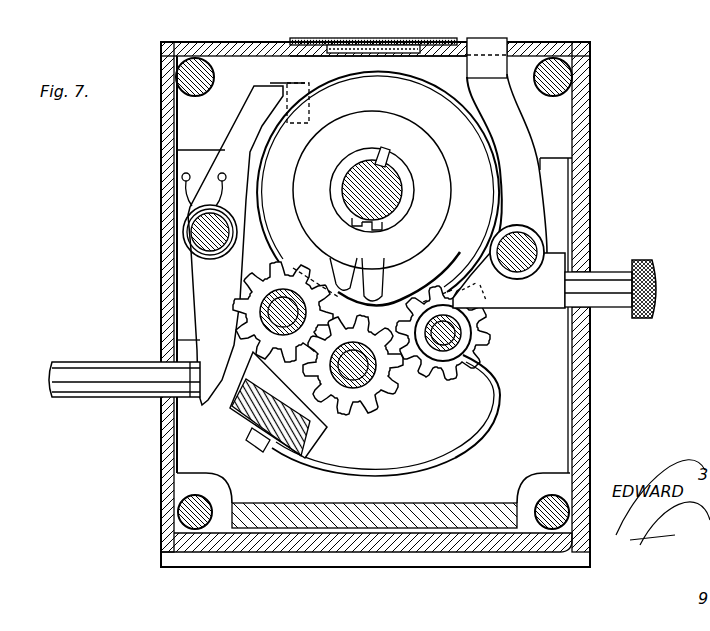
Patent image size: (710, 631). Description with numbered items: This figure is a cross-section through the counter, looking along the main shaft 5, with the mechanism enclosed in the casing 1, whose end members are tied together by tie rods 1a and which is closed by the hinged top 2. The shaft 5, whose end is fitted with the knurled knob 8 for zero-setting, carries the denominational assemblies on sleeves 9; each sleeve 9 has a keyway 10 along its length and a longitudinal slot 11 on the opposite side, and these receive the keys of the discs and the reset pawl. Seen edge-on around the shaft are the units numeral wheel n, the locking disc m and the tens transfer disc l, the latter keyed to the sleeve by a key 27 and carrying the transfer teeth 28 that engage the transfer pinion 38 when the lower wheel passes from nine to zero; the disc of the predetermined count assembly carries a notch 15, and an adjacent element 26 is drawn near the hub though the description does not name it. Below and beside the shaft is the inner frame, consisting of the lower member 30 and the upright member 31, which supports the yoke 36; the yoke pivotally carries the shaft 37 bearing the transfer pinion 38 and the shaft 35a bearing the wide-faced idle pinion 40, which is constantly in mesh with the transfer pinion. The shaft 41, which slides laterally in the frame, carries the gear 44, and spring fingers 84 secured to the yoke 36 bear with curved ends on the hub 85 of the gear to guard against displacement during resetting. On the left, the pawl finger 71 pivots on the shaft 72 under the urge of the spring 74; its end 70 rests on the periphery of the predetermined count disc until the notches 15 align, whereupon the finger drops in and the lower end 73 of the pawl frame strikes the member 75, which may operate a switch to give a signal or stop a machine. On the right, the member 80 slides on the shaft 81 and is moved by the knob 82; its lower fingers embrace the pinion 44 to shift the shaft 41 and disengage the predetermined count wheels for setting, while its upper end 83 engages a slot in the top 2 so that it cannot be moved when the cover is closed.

The casing 1 is at (575, 125).
The tie rods 1a is at (183, 66).
The hinged top 2 is at (548, 44).
The shaft 5 is at (394, 186).
The knurled knob 8 is at (445, 240).
The sleeve 9 is at (390, 224).
The keyway 10 is at (371, 240).
The longitudinal slot 11 is at (372, 152).
The notch 15 is at (337, 118).
The ring 26 is at (332, 262).
The key 27 is at (352, 211).
The transfer teeth 28 is at (356, 275).
The lower member 30 is at (313, 527).
The upright member 31 is at (570, 162).
The shaft 35a is at (343, 402).
The yoke 36 is at (314, 443).
The shaft 37 is at (270, 311).
The transfer pinion 38 is at (248, 287).
The idle pinion 40 is at (370, 407).
The shaft 41 is at (462, 336).
The gear 44 is at (500, 355).
The pawl finger end 70 is at (285, 108).
The pawl finger 71 is at (223, 143).
The shaft 72 is at (184, 232).
The lower end of pawl frame 73 is at (207, 340).
The spring 74 is at (183, 183).
The member 75 is at (126, 397).
The member 80 is at (540, 210).
The shaft 81 is at (545, 240).
The knob 82 is at (657, 293).
The upper end 83 is at (483, 58).
The spring fingers 84 is at (458, 460).
The hub 85 is at (482, 360).
The tens transfer disc l is at (336, 97).
The locking disc m is at (372, 82).
The units numeral wheel n is at (396, 72).